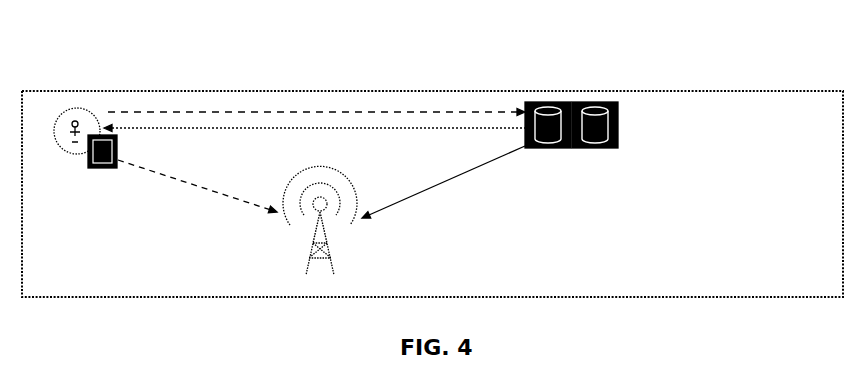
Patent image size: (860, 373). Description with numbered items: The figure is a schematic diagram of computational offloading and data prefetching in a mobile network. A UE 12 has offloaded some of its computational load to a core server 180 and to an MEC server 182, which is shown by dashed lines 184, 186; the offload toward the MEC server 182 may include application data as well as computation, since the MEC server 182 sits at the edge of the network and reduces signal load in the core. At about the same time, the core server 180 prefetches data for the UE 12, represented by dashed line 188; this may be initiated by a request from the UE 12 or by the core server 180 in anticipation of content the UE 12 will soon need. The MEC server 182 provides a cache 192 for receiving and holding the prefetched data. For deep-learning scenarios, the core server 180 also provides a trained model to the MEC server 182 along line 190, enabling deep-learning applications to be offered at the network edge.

The UE 12 is at (87, 130).
The core server 180 is at (595, 102).
The MEC server 182 is at (398, 231).
The cache 192 is at (327, 249).
The dashed line 184 is at (298, 112).
The dashed line 186 is at (225, 193).
The dashed line 188 is at (333, 130).
The line 190 is at (460, 173).